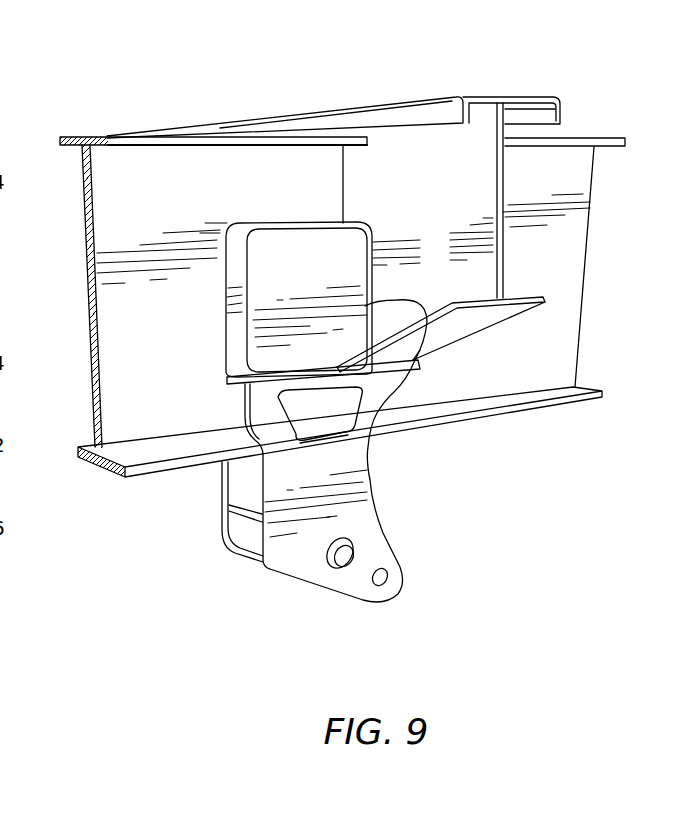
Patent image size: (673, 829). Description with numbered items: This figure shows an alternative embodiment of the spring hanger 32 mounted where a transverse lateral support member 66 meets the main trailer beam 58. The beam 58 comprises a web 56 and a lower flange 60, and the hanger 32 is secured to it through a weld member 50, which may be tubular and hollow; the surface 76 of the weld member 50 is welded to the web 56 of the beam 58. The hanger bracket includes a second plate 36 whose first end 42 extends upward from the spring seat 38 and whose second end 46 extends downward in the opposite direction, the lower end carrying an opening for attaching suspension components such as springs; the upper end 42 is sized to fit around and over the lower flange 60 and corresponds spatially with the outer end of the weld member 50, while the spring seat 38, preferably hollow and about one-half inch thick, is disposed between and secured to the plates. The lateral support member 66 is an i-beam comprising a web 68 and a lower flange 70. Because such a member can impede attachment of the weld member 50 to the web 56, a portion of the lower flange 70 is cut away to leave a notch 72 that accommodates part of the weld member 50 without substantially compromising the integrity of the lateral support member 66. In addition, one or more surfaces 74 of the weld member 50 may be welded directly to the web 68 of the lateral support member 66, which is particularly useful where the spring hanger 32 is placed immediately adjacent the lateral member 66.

The spring hanger 32 is at (238, 607).
The second plate 36 is at (368, 533).
The spring seat 38 is at (243, 483).
The first end of second plate 42 is at (382, 378).
The second end of second plate 46 is at (390, 588).
The weld member 50 is at (313, 271).
The web 56 is at (176, 200).
The beam 58 is at (110, 205).
The lower flange 60 is at (142, 460).
The lateral support member 66 is at (440, 148).
The web 68 is at (425, 194).
The lower flange 70 is at (466, 322).
The notch 72 is at (423, 352).
The surface 74 is at (444, 320).
The surface 76 is at (226, 342).